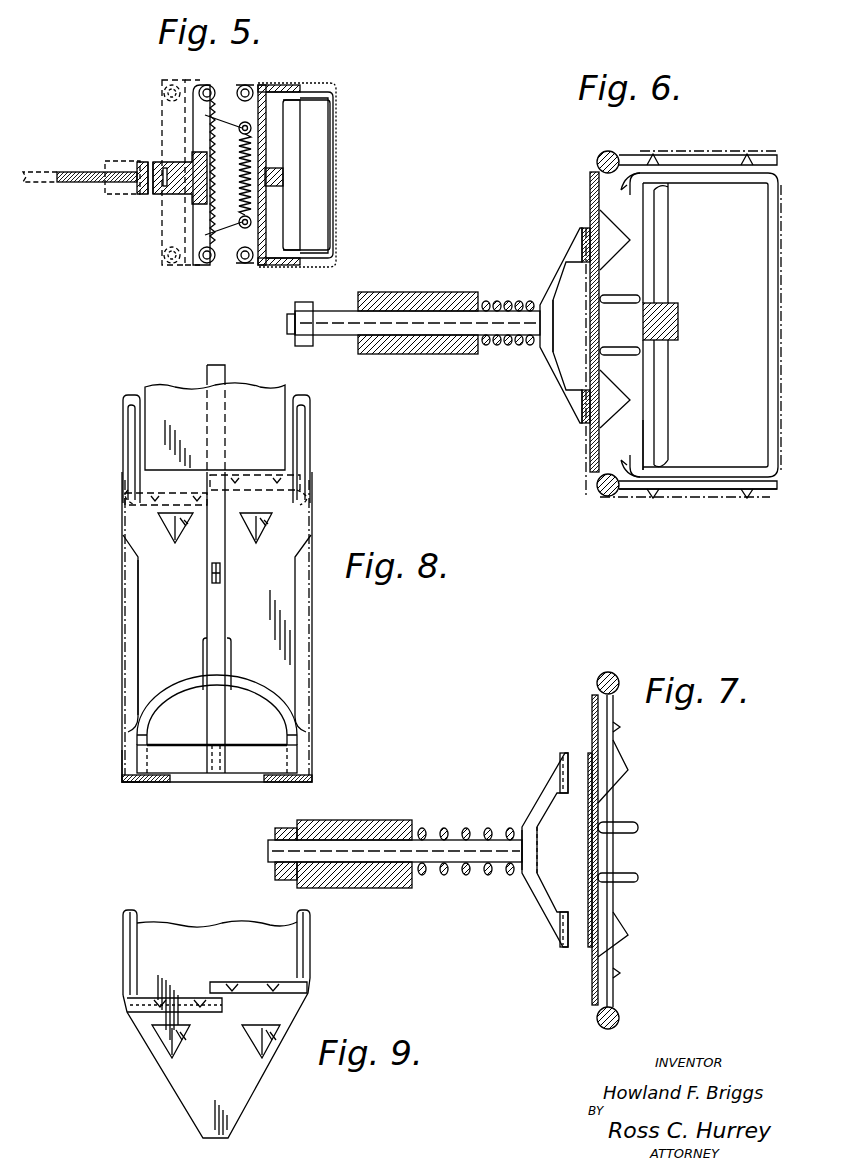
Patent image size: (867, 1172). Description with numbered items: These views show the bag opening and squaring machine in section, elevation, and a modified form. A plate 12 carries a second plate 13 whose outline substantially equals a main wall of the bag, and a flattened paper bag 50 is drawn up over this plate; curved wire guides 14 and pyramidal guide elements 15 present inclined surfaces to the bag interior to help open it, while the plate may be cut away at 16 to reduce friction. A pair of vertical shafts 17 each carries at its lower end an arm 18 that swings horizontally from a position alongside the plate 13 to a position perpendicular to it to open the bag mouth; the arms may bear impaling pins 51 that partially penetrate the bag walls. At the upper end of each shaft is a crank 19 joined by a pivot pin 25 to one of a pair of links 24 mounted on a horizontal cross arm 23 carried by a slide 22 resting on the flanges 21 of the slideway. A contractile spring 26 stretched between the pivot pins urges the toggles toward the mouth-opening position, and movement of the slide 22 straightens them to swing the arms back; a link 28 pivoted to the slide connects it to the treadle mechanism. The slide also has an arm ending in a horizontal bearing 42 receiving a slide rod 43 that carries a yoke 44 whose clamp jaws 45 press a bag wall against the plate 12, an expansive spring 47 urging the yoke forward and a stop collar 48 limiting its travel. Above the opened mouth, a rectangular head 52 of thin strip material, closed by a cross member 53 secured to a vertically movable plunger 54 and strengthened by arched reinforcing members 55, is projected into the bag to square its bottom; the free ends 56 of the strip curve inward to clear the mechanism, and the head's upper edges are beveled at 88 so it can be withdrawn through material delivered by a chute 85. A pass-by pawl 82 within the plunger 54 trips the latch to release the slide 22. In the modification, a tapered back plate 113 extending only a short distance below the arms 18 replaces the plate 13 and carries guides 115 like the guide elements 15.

In FIG. 5, the plate 12 is at (267, 201).
In FIG. 6, the plate 12 is at (580, 320).
In FIG. 7, the plate 12 is at (590, 848).
In FIG. 6, the plate 13 is at (600, 335).
In FIG. 8, the plate 13 is at (140, 627).
In FIG. 7, the plate 13 is at (592, 702).
In FIG. 6, the curved guides 14 is at (623, 286).
In FIG. 8, the curved guides 14 is at (204, 656).
In FIG. 7, the curved guides 14 is at (638, 826).
In FIG. 6, the guide elements 15 is at (612, 228).
In FIG. 8, the guide elements 15 is at (172, 540).
In FIG. 7, the guide elements 15 is at (628, 772).
In FIG. 8, the cut away 16 is at (122, 584).
In FIG. 5, the vertical shafts 17 is at (245, 85).
In FIG. 6, the vertical shafts 17 is at (604, 152).
In FIG. 8, the vertical shafts 17 is at (128, 427).
In FIG. 7, the vertical shafts 17 is at (606, 674).
In FIG. 6, the arms 18 is at (697, 155).
In FIG. 8, the arms 18 is at (140, 503).
In FIG. 7, the arms 18 is at (613, 748).
In FIG. 9, the arms 18 is at (178, 998).
In FIG. 5, the crank 19 is at (250, 105).
In FIG. 5, the flanges 21 is at (148, 164).
In FIG. 5, the slide 22 is at (193, 190).
In FIG. 5, the horizontal cross arm 23 is at (195, 130).
In FIG. 5, the links 24 is at (225, 100).
In FIG. 5, the pivot pin 25 is at (251, 130).
In FIG. 5, the contractile spring 26 is at (251, 155).
In FIG. 5, the link 28 is at (60, 180).
In FIG. 6, the horizontal bearing 42 is at (400, 355).
In FIG. 7, the horizontal bearing 42 is at (382, 805).
In FIG. 6, the slide rod 43 is at (428, 327).
In FIG. 7, the slide rod 43 is at (270, 850).
In FIG. 7, the yoke 44 is at (555, 786).
In FIG. 6, the clamp jaws 45 is at (581, 237).
In FIG. 7, the clamp jaws 45 is at (561, 765).
In FIG. 6, the expansive spring 47 is at (510, 287).
In FIG. 7, the expansive spring 47 is at (452, 828).
In FIG. 6, the stop collar 48 is at (310, 346).
In FIG. 7, the stop collar 48 is at (288, 828).
In FIG. 6, the flattened paper bag 50 is at (720, 498).
In FIG. 8, the flattened paper bag 50 is at (122, 760).
In FIG. 6, the impaling pins 51 is at (656, 155).
In FIG. 8, the impaling pins 51 is at (276, 476).
In FIG. 7, the impaling pins 51 is at (620, 727).
In FIG. 9, the impaling pins 51 is at (274, 982).
In FIG. 6, the rectangular head 52 is at (770, 280).
In FIG. 8, the rectangular head 52 is at (185, 772).
In FIG. 6, the cross member 53 is at (650, 442).
In FIG. 5, the plunger 54 is at (284, 177).
In FIG. 6, the plunger 54 is at (680, 321).
In FIG. 8, the plunger 54 is at (226, 598).
In FIG. 6, the arched reinforcing members 55 is at (660, 252).
In FIG. 8, the arched reinforcing members 55 is at (148, 700).
In FIG. 6, the free ends 56 is at (620, 181).
In FIG. 8, the pass-by pawl 82 is at (212, 575).
In FIG. 5, the chute 85 is at (336, 204).
In FIG. 8, the chute 85 is at (170, 393).
In FIG. 8, the bevel 88 is at (262, 745).
In FIG. 9, the back plate 113 is at (190, 1082).
In FIG. 9, the guides 115 is at (160, 1038).